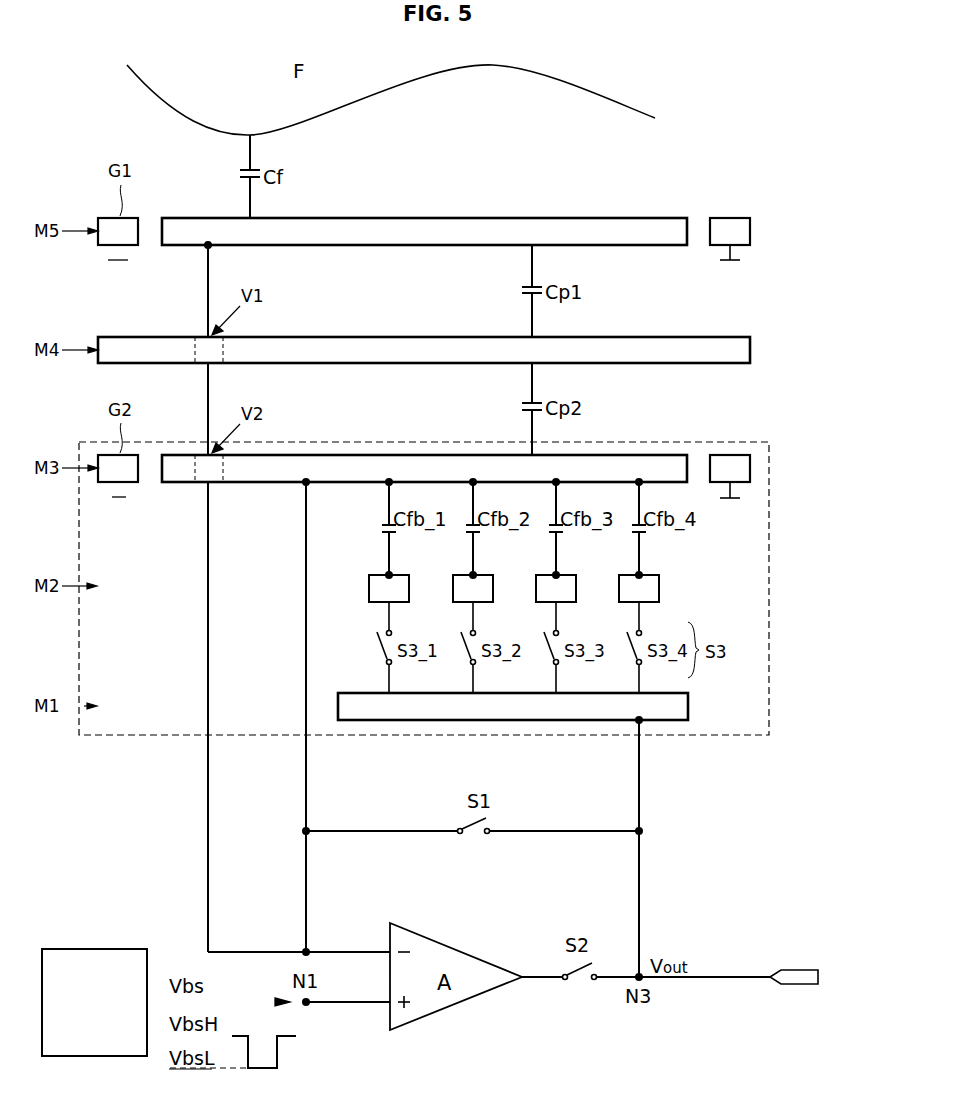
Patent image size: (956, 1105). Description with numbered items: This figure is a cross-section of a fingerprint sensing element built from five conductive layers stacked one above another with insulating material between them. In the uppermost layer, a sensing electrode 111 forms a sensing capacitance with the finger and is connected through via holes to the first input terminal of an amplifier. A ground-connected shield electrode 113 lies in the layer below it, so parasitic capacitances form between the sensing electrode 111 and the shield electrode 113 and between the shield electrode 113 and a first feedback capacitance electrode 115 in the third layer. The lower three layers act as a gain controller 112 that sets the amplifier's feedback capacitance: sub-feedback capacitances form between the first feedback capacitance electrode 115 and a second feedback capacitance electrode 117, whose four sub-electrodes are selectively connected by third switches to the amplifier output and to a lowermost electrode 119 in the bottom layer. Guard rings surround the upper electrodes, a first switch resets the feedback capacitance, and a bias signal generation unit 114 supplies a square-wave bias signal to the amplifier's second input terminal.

The sensing electrode 111 is at (626, 216).
The shield electrode 113 is at (627, 335).
The first feedback capacitance electrode 115 is at (627, 453).
The gain controller 112 is at (769, 467).
The second feedback capacitance electrode 117 is at (376, 610).
The lowermost electrode 119 is at (688, 705).
The bias signal generation unit 114 is at (92, 947).